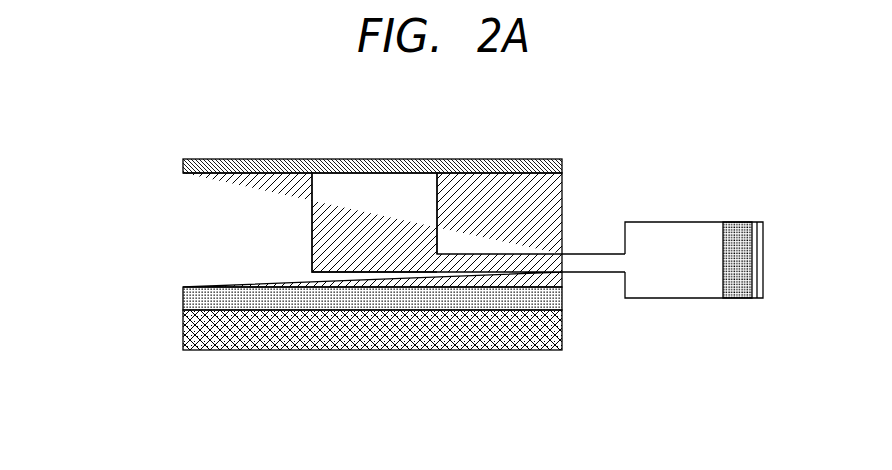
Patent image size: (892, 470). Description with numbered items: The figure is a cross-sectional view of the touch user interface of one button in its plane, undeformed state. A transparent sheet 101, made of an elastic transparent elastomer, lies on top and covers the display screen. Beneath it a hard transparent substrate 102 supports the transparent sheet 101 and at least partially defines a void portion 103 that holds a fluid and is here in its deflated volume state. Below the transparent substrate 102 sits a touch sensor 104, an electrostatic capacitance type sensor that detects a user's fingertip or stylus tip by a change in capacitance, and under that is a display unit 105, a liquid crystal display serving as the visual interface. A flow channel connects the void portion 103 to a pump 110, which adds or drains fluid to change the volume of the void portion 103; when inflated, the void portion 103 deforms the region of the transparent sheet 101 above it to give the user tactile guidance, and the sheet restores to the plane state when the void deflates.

The transparent sheet 101 is at (500, 165).
The transparent substrate 102 is at (545, 195).
The void portion 103 is at (343, 190).
The touch sensor 104 is at (200, 297).
The display unit 105 is at (197, 330).
The pump 110 is at (685, 281).